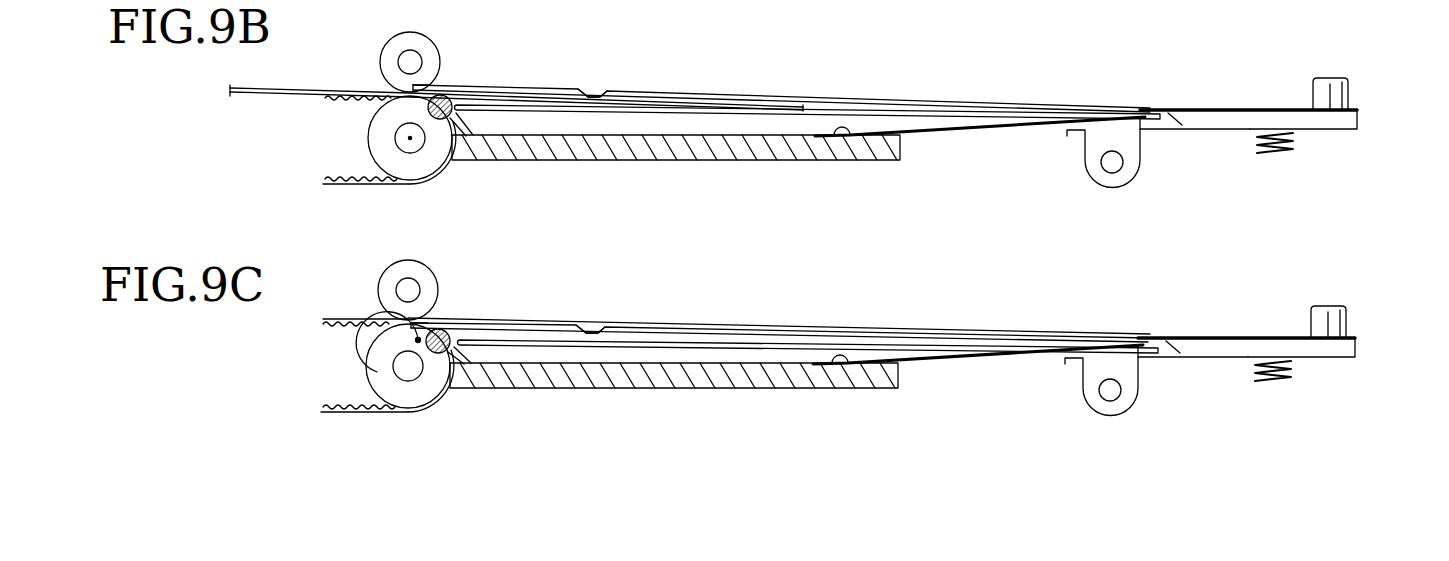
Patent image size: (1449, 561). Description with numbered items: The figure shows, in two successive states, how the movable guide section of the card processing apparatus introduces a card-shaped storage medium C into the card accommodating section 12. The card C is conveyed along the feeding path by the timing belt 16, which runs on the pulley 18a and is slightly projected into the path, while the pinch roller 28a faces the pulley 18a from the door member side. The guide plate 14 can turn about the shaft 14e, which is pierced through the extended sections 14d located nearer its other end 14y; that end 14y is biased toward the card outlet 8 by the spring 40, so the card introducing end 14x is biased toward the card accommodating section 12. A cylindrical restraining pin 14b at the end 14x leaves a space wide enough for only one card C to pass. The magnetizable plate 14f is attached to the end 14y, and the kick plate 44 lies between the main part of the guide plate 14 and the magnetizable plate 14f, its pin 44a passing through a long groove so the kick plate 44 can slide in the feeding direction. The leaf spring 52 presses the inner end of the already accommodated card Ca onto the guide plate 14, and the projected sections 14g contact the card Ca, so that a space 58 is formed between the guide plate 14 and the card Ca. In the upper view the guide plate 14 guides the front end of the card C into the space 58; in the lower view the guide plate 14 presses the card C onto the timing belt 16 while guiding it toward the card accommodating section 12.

In FIG. 9B, the card outlet 8 is at (778, 58).
In FIG. 9C, the card outlet 8 is at (780, 269).
In FIG. 9B, the card accommodating section 12 is at (665, 125).
In FIG. 9C, the card accommodating section 12 is at (674, 405).
In FIG. 9B, the guide plate 14 is at (690, 88).
In FIG. 9C, the guide plate 14 is at (779, 296).
In FIG. 9B, the restraining pin 14b is at (449, 118).
In FIG. 9C, the restraining pin 14b is at (452, 396).
In FIG. 9B, the extended sections 14d is at (1092, 178).
In FIG. 9C, the extended sections 14d is at (1091, 412).
In FIG. 9B, the shaft 14e is at (1115, 163).
In FIG. 9C, the shaft 14e is at (1131, 436).
In FIG. 9B, the magnetizable plate 14f is at (1215, 121).
In FIG. 9C, the magnetizable plate 14f is at (1193, 395).
In FIG. 9B, the projected sections 14g is at (590, 97).
In FIG. 9C, the projected sections 14g is at (607, 291).
In FIG. 9B, the card introducing end 14x is at (414, 87).
In FIG. 9C, the card introducing end 14x is at (469, 304).
In FIG. 9B, the other end of guide plate 14y is at (1253, 108).
In FIG. 9C, the other end of guide plate 14y is at (1246, 301).
In FIG. 9B, the timing belt 16 is at (347, 183).
In FIG. 9C, the timing belt 16 is at (387, 394).
In FIG. 9B, the pulley 18a is at (428, 165).
In FIG. 9C, the pulley 18a is at (413, 399).
In FIG. 9B, the pinch roller 28a is at (428, 52).
In FIG. 9C, the pinch roller 28a is at (446, 289).
In FIG. 9B, the spring 40 is at (1275, 155).
In FIG. 9C, the spring 40 is at (1273, 405).
In FIG. 9B, the kick plate 44 is at (1362, 115).
In FIG. 9C, the kick plate 44 is at (1339, 347).
In FIG. 9B, the pin 44a is at (1333, 80).
In FIG. 9C, the pin 44a is at (1348, 293).
In FIG. 9B, the leaf spring 52 is at (955, 133).
In FIG. 9C, the leaf spring 52 is at (978, 387).
In FIG. 9B, the space 58 is at (478, 101).
In FIG. 9B, the card-shaped storage medium C is at (263, 95).
In FIG. 9C, the card-shaped storage medium C is at (753, 314).
In FIG. 9B, the card Ca is at (801, 109).
In FIG. 9C, the card Ca is at (787, 396).